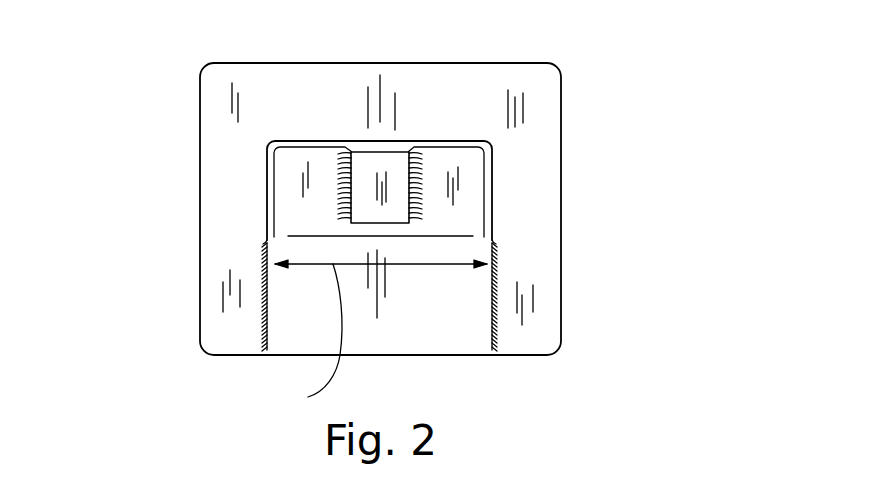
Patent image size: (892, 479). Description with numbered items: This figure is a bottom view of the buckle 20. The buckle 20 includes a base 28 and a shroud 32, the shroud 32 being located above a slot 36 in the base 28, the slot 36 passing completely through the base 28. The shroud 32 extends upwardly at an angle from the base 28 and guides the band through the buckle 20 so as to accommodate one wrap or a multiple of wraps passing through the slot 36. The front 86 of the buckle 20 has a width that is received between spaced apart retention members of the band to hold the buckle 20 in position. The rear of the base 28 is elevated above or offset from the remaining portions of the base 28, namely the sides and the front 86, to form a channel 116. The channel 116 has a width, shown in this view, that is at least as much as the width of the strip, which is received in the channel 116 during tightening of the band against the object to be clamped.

The buckle 20 is at (606, 180).
The base 28 is at (562, 110).
The shroud 32 is at (291, 192).
The slot 36 is at (390, 150).
The front 86 is at (472, 108).
The channel 116 is at (393, 322).